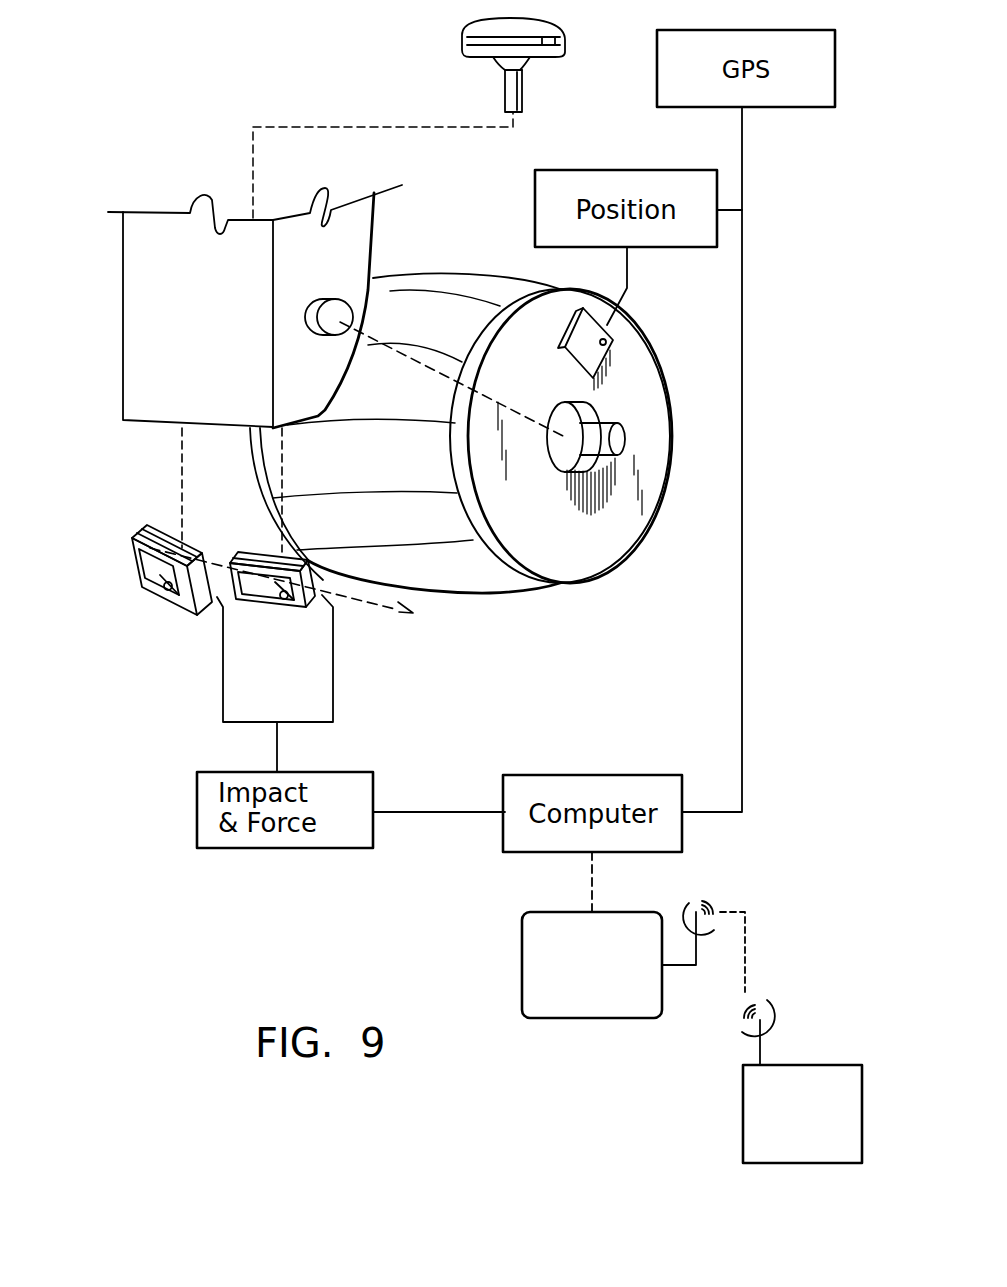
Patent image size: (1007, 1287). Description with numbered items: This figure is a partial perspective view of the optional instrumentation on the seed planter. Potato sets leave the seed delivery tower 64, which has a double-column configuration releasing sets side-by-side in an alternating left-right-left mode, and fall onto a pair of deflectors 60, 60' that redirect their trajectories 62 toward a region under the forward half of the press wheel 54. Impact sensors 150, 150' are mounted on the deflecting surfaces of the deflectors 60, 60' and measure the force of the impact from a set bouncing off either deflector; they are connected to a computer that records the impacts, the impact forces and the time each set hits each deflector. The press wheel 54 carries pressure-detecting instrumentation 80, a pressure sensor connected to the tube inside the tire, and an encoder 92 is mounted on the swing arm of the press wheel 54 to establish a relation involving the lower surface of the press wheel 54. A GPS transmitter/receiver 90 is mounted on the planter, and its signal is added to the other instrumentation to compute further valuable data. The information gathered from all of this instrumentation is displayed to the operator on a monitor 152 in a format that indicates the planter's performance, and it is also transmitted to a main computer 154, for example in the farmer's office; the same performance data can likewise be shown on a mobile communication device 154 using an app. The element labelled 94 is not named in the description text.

The press wheel 54 is at (476, 273).
The seed delivery tower 64 is at (206, 320).
The encoder 92 is at (349, 300).
The drum wall 94 is at (403, 290).
The GPS transmitter/receiver 90 is at (562, 50).
The pressure-detecting instrumentation 80 is at (615, 330).
The trajectories 62 is at (180, 450).
The deflector 60 is at (136, 575).
The impact sensor 150 is at (144, 517).
The deflector 60' is at (275, 641).
The impact sensor 150' is at (250, 526).
The monitor 152 is at (522, 946).
The main computer 154 is at (806, 1065).